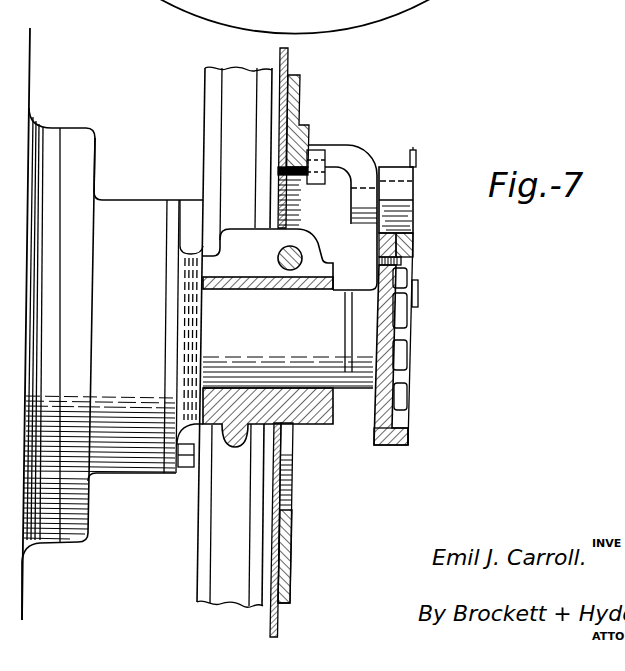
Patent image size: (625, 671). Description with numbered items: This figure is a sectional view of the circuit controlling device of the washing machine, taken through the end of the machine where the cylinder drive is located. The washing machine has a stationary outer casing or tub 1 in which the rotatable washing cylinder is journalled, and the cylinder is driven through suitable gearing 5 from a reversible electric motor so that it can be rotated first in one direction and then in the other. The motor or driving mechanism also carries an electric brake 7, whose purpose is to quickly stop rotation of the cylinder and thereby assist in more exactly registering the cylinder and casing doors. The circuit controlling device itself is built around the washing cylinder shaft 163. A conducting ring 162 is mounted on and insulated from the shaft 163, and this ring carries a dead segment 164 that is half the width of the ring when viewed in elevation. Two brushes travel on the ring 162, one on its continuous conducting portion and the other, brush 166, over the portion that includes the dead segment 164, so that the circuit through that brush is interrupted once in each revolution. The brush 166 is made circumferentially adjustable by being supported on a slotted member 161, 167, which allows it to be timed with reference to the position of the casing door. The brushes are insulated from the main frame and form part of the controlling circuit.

The stationary outer casing or tub 1 is at (30, 37).
The gearing 5 is at (203, 97).
The electric brake 7 is at (294, 0).
The flange plate 161 is at (417, 310).
The conducting ring 162 is at (405, 437).
The washing cylinder shaft 163 is at (337, 367).
The dead segment 164 is at (412, 245).
The brush 166 is at (407, 192).
The member 167 is at (357, 147).